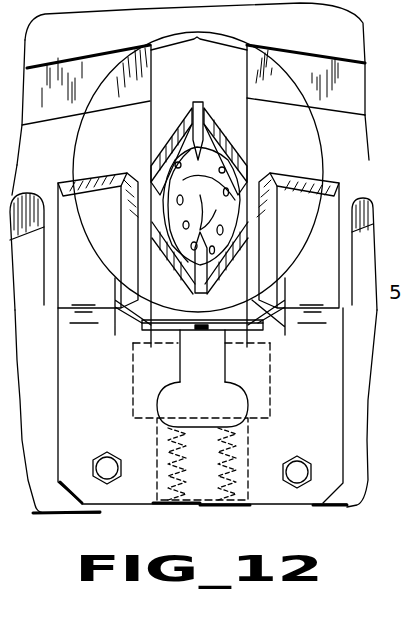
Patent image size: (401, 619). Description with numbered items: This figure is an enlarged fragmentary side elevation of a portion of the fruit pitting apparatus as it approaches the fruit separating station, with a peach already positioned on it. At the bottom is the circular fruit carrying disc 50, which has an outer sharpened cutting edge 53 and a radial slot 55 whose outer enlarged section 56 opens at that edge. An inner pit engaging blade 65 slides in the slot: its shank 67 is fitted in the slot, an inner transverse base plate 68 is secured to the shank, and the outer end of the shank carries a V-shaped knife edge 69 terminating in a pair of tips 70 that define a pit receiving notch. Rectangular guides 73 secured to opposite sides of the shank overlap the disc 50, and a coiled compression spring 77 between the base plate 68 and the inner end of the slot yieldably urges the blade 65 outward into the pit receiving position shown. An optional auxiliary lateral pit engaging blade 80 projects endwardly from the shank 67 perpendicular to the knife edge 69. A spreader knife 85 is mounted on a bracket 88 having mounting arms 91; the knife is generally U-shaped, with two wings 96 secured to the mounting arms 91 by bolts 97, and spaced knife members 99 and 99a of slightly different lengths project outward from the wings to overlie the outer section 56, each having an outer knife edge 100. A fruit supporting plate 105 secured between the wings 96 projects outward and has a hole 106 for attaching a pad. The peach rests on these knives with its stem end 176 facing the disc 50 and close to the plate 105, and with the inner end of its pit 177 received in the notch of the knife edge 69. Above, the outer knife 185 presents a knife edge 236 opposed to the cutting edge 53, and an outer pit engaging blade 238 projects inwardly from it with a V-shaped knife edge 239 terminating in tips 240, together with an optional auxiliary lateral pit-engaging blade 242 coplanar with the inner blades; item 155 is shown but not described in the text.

The fruit carrying disc 50 is at (358, 509).
The cutting edge 53 is at (20, 203).
The slot 55 is at (77, 192).
The outer enlarged section 56 is at (48, 283).
The inner pit engaging blade 65 is at (148, 302).
The shank 67 is at (235, 316).
The base plate 68 is at (203, 424).
The knife edge 69 is at (168, 258).
The tips 70 is at (148, 232).
The guides 73 is at (188, 382).
The compression spring 77 is at (157, 443).
The auxiliary lateral pit engaging blade 80 is at (197, 291).
The spreader knife 85 is at (56, 318).
The mounting bracket 88 is at (99, 510).
The mounting arms 91 is at (123, 507).
The wings 96 is at (290, 391).
The bolts 97 is at (107, 466).
The shorter knife member 99 is at (303, 285).
The longer knife member 99a is at (72, 280).
The outer knife edge 100 is at (76, 166).
The fruit supporting plate 105 is at (250, 327).
The hole 106 is at (200, 330).
The roof line 155 is at (206, 41).
The stem end 176 is at (277, 320).
The pit 177 is at (180, 208).
The outer knife 185 is at (400, 40).
The knife edge 236 is at (140, 62).
The outer pit engaging blade 238 is at (253, 117).
The V-shaped knife edge 239 is at (164, 138).
The tips 240 is at (148, 172).
The auxiliary lateral pit-engaging blade 242 is at (199, 101).